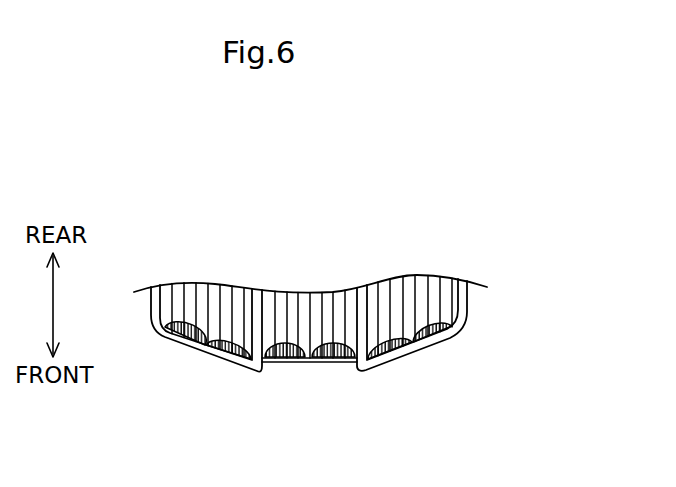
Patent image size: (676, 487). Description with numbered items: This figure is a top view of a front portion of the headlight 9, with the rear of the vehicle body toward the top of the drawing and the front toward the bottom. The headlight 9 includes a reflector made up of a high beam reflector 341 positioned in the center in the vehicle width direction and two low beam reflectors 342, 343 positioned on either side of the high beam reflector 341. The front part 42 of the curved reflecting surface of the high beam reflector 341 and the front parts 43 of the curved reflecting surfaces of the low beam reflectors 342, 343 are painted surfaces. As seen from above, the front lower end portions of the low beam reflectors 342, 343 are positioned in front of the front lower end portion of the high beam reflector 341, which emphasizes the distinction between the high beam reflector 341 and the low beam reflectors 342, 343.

The headlight 9 is at (517, 313).
The low beam reflector 343 is at (210, 323).
The front part of curved reflecting surface 43 is at (233, 360).
The front part of curved reflecting surface 42 is at (280, 362).
The high beam reflector 341 is at (317, 337).
The low beam reflector 342 is at (408, 320).